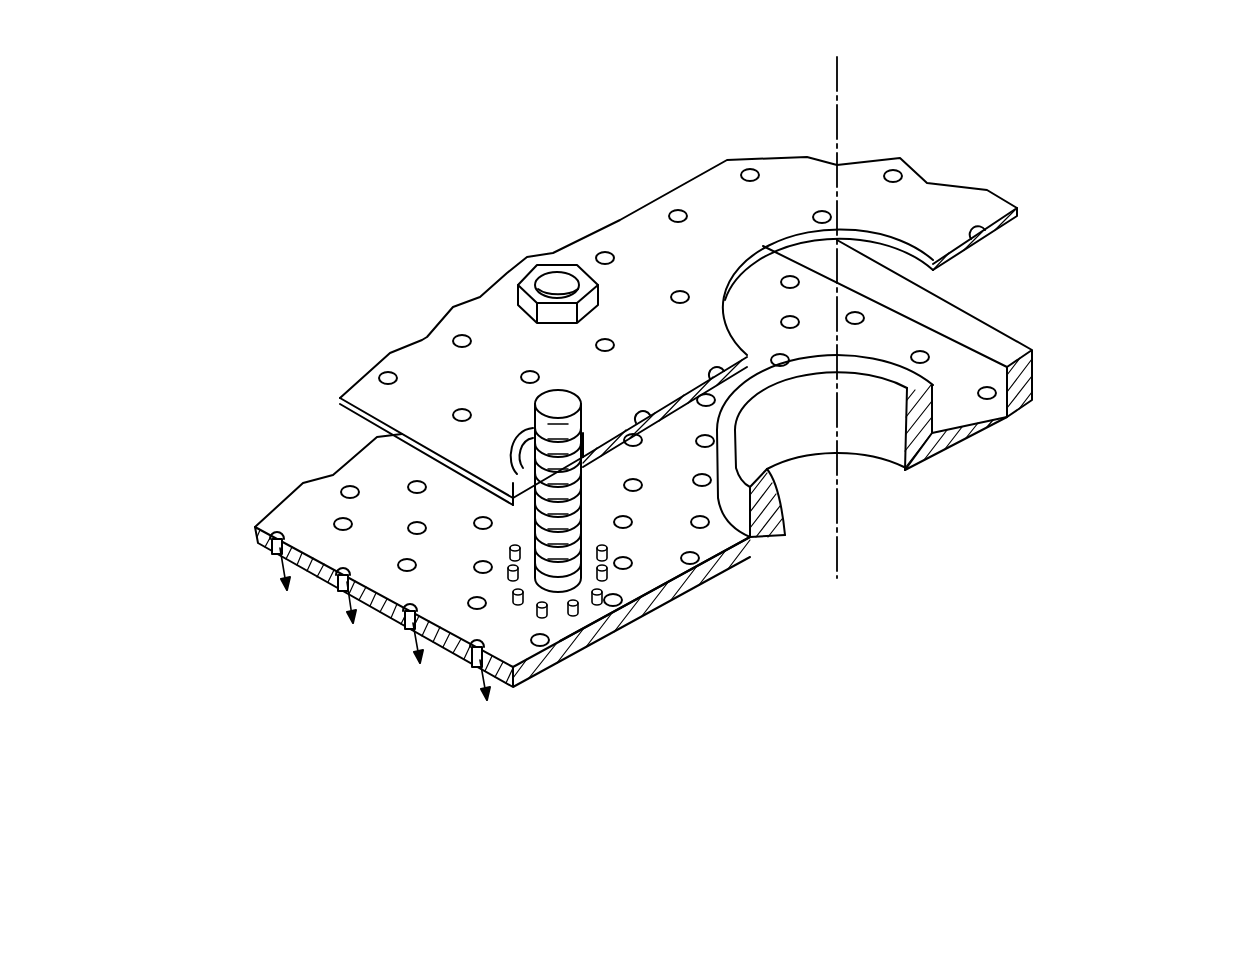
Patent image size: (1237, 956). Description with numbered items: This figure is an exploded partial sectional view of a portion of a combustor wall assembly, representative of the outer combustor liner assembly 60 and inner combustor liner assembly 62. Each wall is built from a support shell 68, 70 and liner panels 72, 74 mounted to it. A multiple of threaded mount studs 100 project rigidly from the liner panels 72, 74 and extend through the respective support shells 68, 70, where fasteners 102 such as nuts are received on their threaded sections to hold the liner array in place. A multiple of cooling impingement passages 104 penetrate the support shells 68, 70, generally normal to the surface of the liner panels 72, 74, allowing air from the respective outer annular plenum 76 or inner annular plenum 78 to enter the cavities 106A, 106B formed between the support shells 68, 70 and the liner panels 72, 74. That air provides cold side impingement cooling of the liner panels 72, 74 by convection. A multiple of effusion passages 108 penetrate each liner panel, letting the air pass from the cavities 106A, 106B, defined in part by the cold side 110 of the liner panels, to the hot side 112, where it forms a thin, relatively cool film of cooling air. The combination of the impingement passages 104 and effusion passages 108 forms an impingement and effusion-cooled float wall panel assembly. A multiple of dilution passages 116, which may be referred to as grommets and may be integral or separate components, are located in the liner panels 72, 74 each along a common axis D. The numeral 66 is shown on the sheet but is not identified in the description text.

The outer combustor liner assembly 60 is at (1092, 176).
The inner combustor liner assembly 62 is at (699, 442).
The base 66 is at (945, 621).
The support shell 68 is at (988, 162).
The support shell 70 is at (695, 278).
The liner panel 72 is at (1023, 425).
The liner panel 74 is at (928, 409).
The outer annular plenum 76 is at (388, 230).
The inner annular plenum 78 is at (678, 310).
The threaded mount stud 100 is at (530, 412).
The fastener 102 is at (568, 267).
The cooling impingement passage 104 is at (678, 213).
The cavity 106A is at (305, 447).
The cavity 106B is at (487, 532).
The effusion passage 108 is at (342, 522).
The cold side 110 is at (643, 577).
The hot side 112 is at (600, 633).
The dilution passage 116 is at (857, 468).
The common axis D is at (838, 95).